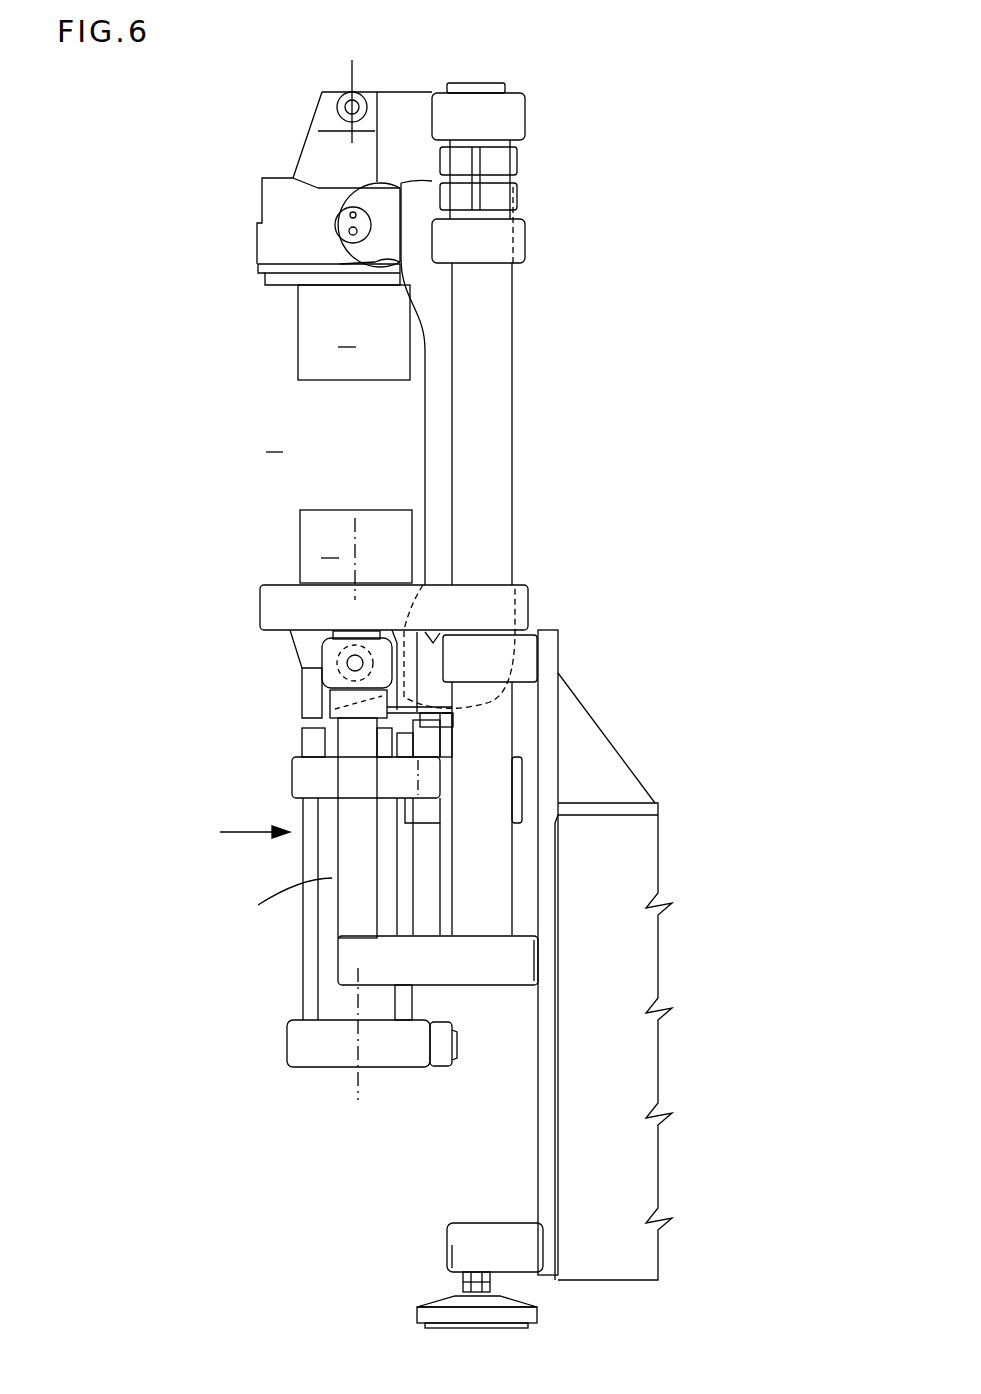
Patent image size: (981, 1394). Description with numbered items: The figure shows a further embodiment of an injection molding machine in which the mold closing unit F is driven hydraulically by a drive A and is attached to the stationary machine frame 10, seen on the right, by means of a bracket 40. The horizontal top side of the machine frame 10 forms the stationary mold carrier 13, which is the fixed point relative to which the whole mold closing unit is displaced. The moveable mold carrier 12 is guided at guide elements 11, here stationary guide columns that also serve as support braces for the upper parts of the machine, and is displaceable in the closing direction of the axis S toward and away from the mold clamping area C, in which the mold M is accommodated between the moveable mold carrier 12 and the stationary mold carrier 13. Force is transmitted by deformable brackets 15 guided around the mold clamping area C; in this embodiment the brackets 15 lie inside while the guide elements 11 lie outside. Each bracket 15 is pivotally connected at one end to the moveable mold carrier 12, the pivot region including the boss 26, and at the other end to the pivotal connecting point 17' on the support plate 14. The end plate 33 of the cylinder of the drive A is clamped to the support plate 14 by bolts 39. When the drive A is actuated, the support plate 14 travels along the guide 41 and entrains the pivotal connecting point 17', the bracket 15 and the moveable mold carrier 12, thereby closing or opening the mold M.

The machine frame 10 is at (630, 990).
The guide elements 11 is at (485, 468).
The moveable mold carrier 12 is at (308, 273).
The stationary mold carrier 13 is at (288, 603).
The support plate 14 is at (312, 777).
The bracket 15 is at (438, 345).
The pivotal connecting point 17' is at (322, 678).
The pivot boss 26 is at (345, 213).
The end plate 33 is at (302, 1048).
The bolts 39 is at (312, 952).
The bracket 40 is at (553, 645).
The guide 41 is at (350, 843).
The injection molding unit S is at (346, 584).
The mold M is at (355, 442).
The mold clamping area C is at (274, 439).
The mold closing unit F is at (246, 834).
The drive A is at (282, 900).